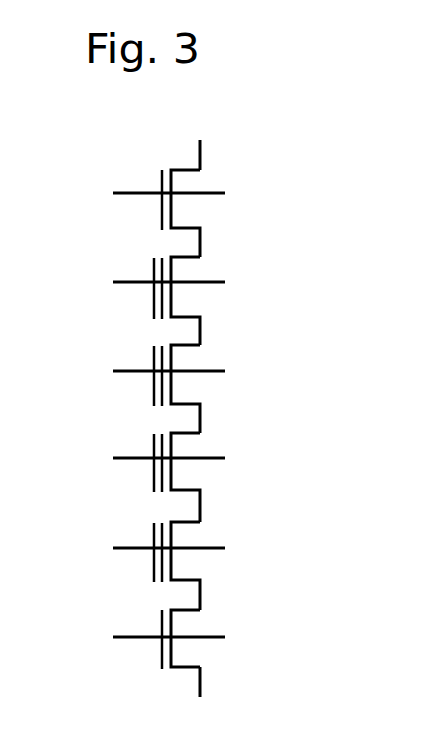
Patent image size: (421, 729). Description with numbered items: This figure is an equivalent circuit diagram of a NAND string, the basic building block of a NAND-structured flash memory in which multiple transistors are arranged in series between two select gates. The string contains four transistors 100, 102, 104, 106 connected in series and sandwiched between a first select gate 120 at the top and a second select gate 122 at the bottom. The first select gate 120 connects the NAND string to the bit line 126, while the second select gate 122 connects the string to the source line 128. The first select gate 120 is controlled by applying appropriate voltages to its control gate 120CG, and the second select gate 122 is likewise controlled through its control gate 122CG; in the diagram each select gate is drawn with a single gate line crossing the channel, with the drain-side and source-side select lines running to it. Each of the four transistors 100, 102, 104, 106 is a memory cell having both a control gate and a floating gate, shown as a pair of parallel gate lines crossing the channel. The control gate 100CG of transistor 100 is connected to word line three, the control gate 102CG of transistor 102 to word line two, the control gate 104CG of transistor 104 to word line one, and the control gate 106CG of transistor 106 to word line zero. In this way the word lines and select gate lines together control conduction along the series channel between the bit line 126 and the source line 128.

The bit line 126 is at (202, 142).
The first select gate 120 is at (206, 183).
The control gate 120CG is at (160, 183).
The transistor 100 is at (204, 272).
The control gate 100CG is at (155, 272).
The transistor 102 is at (204, 361).
The control gate 102CG is at (155, 361).
The transistor 104 is at (204, 448).
The control gate 104CG is at (155, 448).
The transistor 106 is at (204, 538).
The control gate 106CG is at (155, 538).
The second select gate 122 is at (205, 627).
The control gate 122CG is at (160, 630).
The source line 128 is at (202, 695).